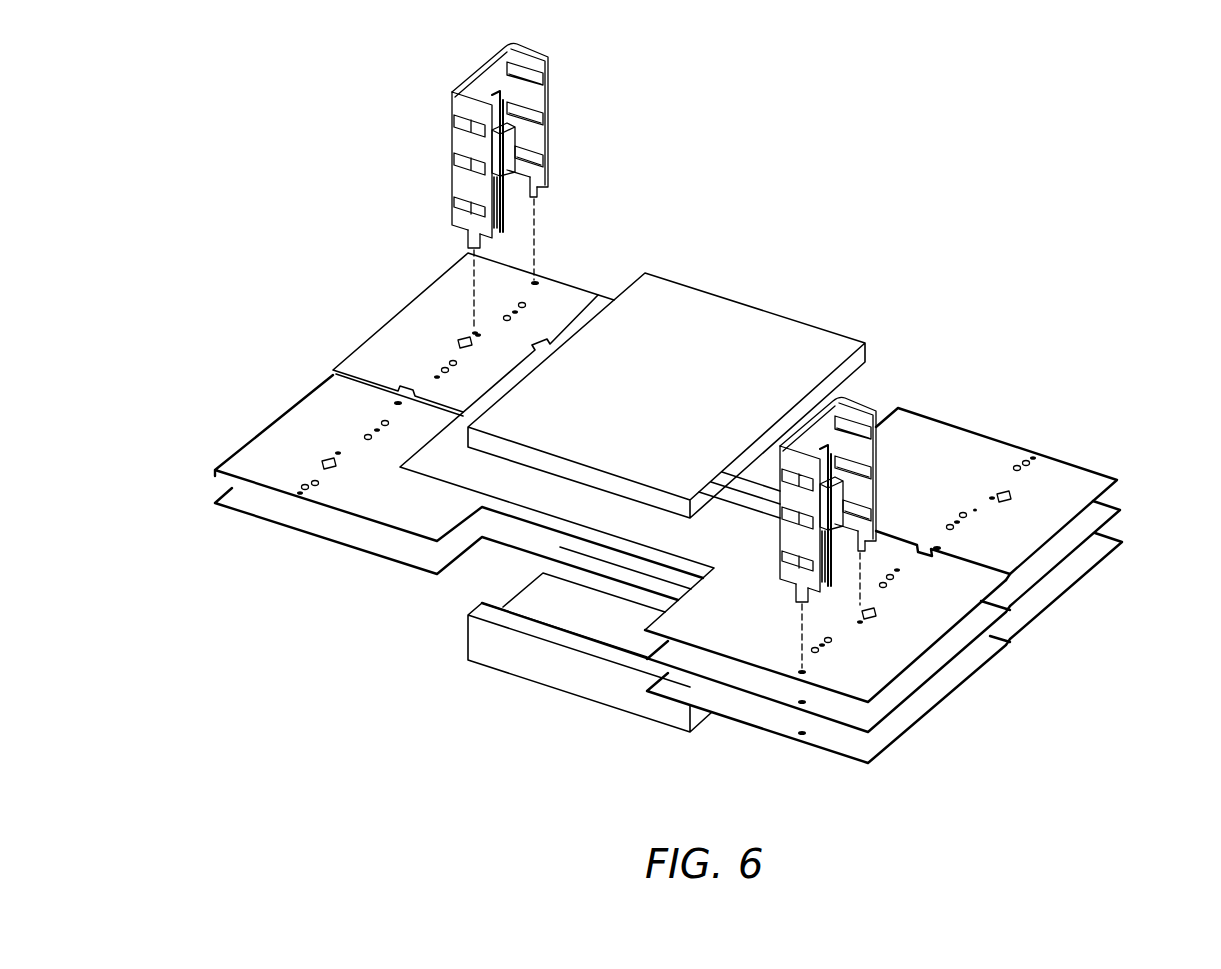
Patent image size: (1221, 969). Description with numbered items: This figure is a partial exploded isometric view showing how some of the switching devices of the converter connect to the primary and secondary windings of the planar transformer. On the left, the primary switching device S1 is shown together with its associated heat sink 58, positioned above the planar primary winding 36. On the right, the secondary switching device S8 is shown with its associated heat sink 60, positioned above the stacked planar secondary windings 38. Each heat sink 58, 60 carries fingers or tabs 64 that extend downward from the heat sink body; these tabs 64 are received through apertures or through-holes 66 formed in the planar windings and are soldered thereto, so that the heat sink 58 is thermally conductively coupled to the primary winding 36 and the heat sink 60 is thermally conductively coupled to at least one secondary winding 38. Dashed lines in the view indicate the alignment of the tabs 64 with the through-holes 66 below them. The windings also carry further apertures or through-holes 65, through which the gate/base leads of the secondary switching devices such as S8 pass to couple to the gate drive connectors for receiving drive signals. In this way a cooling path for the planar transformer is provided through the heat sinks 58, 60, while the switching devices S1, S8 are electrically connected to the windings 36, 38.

The primary winding 36 is at (216, 489).
The secondary windings 38 is at (1105, 545).
The heat sink 58 is at (531, 46).
The heat sink 60 is at (868, 398).
The fingers or tabs 64 is at (539, 192).
The apertures or through-holes 65 is at (953, 494).
The apertures or through-holes 66 is at (536, 282).
The primary switching device S1 is at (508, 148).
The secondary switching device S8 is at (833, 504).